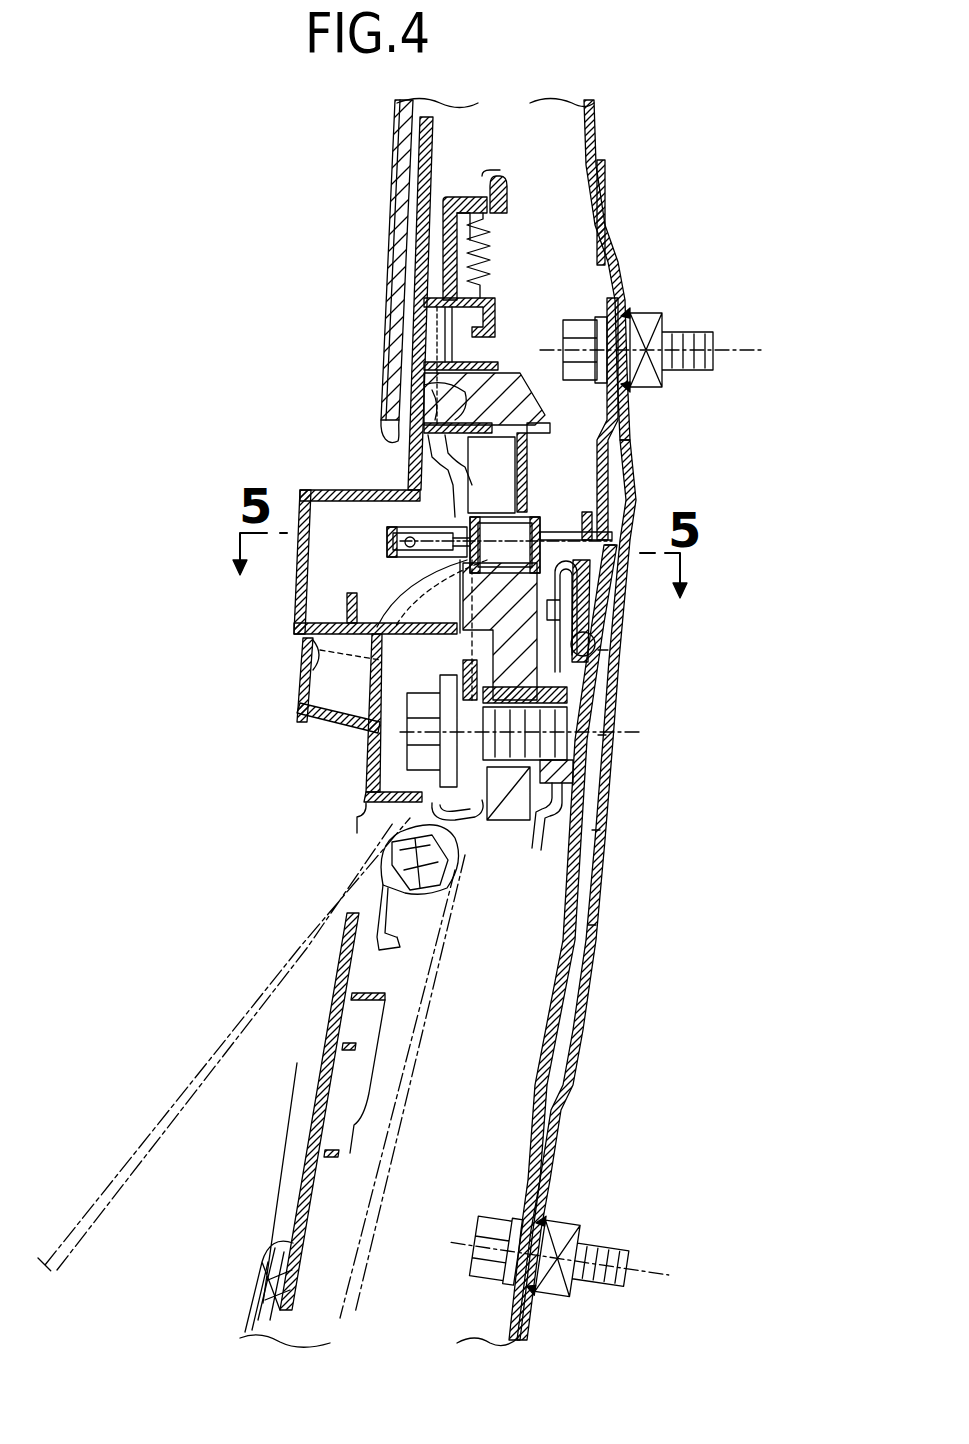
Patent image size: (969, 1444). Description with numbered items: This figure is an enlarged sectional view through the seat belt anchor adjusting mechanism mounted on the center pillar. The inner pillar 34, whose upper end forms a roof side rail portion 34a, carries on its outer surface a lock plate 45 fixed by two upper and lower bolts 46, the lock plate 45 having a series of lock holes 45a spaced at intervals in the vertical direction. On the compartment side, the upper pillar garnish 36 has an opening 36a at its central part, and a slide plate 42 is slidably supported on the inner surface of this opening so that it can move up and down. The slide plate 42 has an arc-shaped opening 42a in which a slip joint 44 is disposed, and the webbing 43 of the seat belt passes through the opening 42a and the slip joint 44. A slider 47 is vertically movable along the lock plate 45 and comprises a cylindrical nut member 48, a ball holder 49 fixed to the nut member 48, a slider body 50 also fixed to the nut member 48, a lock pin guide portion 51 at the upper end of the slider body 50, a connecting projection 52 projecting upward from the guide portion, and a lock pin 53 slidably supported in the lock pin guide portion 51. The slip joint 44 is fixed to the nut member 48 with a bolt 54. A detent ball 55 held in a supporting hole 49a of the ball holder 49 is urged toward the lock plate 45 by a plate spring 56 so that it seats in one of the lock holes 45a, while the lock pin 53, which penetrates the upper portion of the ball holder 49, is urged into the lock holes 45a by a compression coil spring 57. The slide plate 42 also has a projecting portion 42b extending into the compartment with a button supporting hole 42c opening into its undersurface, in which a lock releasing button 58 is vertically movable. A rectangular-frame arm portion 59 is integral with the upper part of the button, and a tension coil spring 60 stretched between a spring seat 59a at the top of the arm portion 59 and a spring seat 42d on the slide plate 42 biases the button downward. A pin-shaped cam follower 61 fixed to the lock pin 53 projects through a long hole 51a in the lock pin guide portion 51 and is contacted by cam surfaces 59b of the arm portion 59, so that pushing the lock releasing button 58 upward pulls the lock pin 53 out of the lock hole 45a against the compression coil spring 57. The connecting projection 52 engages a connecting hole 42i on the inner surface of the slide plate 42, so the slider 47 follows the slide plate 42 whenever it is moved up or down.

The inner pillar 34 is at (590, 985).
The roof side rail portion 34a is at (600, 130).
The upper pillar garnish 36 is at (397, 170).
The opening 36a is at (392, 412).
The slide plate 42 is at (400, 455).
The opening 42a is at (365, 805).
The projecting portion 42b is at (308, 560).
The button supporting hole 42c is at (305, 678).
The spring seat 42d is at (497, 310).
The connecting hole 42i is at (410, 360).
The webbing 43 is at (200, 1060).
The slip joint 44 is at (385, 890).
The lock plate 45 is at (545, 1030).
The lock holes 45a is at (612, 548).
The bolts 46 is at (690, 335).
The slider 47 is at (517, 822).
The nut member 48 is at (560, 773).
The ball holder 49 is at (586, 503).
The supporting hole 49a is at (560, 640).
The slider body 50 is at (480, 650).
The lock pin guide portion 51 is at (490, 510).
The long hole 51a is at (400, 540).
The connecting projection 52 is at (505, 370).
The lock pin 53 is at (560, 537).
The bolt 54 is at (420, 745).
The detent ball 55 is at (592, 645).
The plate spring 56 is at (575, 600).
The compression coil spring 57 is at (530, 510).
The lock releasing button 58 is at (355, 722).
The arm portion 59 is at (463, 196).
The spring seat 59a is at (500, 178).
The cam surfaces 59b is at (417, 593).
The tension coil spring 60 is at (490, 240).
The cam follower 61 is at (418, 537).